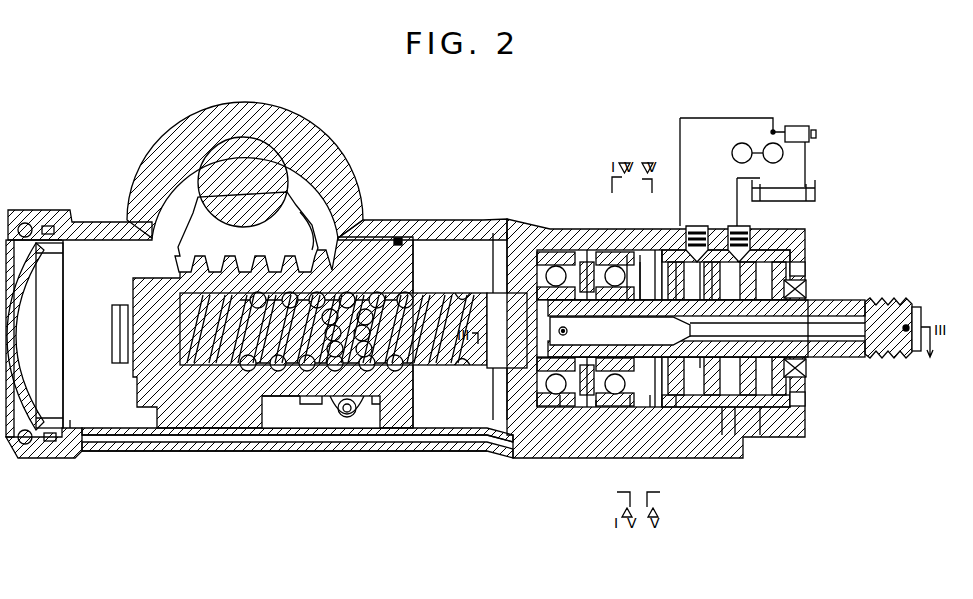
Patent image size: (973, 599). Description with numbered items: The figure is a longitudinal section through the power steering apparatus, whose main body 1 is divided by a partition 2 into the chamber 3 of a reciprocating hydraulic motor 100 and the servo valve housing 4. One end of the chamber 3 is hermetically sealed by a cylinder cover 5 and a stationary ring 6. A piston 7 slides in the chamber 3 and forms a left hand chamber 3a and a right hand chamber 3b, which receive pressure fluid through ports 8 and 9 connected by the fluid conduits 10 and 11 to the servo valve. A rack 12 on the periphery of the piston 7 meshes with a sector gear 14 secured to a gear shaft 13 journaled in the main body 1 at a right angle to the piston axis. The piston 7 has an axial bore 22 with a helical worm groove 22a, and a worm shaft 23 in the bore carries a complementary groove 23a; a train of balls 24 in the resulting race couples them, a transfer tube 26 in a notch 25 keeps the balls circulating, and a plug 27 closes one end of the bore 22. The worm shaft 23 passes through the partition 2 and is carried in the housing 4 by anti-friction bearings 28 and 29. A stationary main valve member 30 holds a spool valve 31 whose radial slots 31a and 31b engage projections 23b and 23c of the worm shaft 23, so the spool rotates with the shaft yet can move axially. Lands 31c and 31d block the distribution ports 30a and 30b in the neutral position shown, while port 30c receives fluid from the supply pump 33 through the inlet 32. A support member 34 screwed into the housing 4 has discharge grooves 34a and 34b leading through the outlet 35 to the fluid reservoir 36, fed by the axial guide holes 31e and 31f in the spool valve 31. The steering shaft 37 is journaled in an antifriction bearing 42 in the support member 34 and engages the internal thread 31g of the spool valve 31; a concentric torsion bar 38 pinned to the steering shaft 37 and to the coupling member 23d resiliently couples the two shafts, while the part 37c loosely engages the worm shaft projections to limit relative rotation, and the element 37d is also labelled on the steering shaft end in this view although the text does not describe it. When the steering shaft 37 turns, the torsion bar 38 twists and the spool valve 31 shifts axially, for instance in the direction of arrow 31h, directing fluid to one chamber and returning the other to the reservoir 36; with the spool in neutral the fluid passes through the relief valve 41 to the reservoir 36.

The main body 1 is at (437, 222).
The partition 2 is at (527, 250).
The chamber 3 is at (139, 429).
The left hand chamber 3a is at (84, 380).
The right hand chamber 3b is at (436, 394).
The servo valve housing 4 is at (630, 262).
The cylinder cover 5 is at (14, 337).
The stationary ring 6 is at (30, 445).
The piston 7 is at (217, 410).
The port 8 is at (68, 430).
The port 9 is at (499, 428).
The fluid conduit 10 is at (432, 442).
The fluid conduit 11 is at (537, 436).
The rack 12 is at (298, 247).
The gear shaft 13 is at (268, 158).
The sector gear 14 is at (190, 222).
The axial bore 22 is at (212, 372).
The helical worm groove 22a is at (250, 326).
The worm shaft 23 is at (492, 338).
The helical worm groove 23a is at (435, 296).
The projection 23b is at (588, 278).
The projection 23c is at (582, 404).
The coupling member 23d is at (600, 407).
The balls 24 is at (340, 293).
The notch 25 is at (283, 430).
The transfer tube 26 is at (344, 418).
The plug 27 is at (122, 305).
The anti-friction bearing 28 is at (557, 404).
The anti-friction bearing 29 is at (605, 262).
The main valve member 30 is at (768, 427).
The distribution port 30a is at (652, 400).
The distribution port 30b is at (730, 440).
The port 30c is at (702, 230).
The spool valve 31 is at (745, 420).
The radial slot 31a is at (640, 275).
The radial slot 31b is at (630, 404).
The land 31c is at (675, 275).
The land 31d is at (722, 445).
The axial guide hole 31e is at (714, 255).
The axial guide hole 31f is at (674, 405).
The internal thread 31g is at (703, 360).
The arrow 31h is at (760, 427).
The inlet 32 is at (697, 240).
The supply pump 33 is at (768, 144).
The support member 34 is at (803, 267).
The groove 34a is at (778, 227).
The groove 34b is at (798, 438).
The outlet 35 is at (742, 228).
The fluid reservoir 36 is at (815, 190).
The steering shaft 37 is at (840, 354).
The part 37c is at (604, 512).
The flange 37d is at (624, 268).
The torsion bar 38 is at (838, 326).
The relief valve 41 is at (797, 128).
The antifriction bearing 42 is at (790, 362).
The hydraulic motor 100 is at (248, 456).